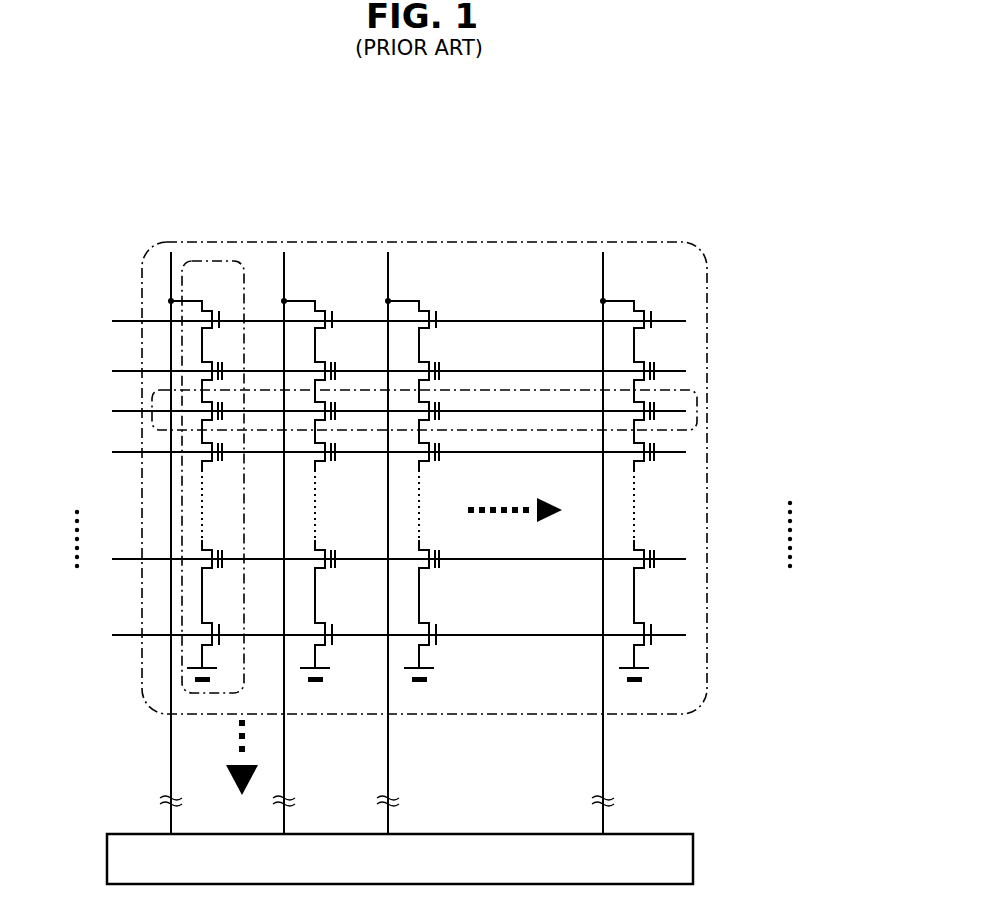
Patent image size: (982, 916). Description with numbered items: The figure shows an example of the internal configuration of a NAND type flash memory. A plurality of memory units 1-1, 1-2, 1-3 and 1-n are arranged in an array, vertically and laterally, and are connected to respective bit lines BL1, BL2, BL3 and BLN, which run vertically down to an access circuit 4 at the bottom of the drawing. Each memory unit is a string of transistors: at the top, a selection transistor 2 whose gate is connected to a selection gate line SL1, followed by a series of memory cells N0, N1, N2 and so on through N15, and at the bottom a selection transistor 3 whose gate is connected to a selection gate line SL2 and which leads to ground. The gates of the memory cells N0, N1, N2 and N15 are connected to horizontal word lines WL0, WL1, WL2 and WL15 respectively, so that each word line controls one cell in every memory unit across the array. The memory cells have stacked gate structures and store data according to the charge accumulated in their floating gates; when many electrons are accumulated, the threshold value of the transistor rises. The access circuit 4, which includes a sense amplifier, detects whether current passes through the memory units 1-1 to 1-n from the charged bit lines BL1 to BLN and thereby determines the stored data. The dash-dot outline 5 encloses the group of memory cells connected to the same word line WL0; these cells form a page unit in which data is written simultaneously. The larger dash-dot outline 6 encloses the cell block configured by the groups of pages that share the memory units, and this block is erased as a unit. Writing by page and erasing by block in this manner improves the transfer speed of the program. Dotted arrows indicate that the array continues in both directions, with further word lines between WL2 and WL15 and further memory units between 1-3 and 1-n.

The memory unit 1-1 is at (218, 250).
The memory unit 1-2 is at (322, 287).
The memory unit 1-3 is at (425, 287).
The memory unit 1-n is at (648, 289).
The selection transistor 2 is at (205, 303).
The selection transistor 3 is at (205, 648).
The access circuit 4 is at (693, 858).
The group of memory cells 5 is at (700, 402).
The cell block 6 is at (702, 250).
The selection gate line SL1 is at (121, 321).
The selection gate line SL2 is at (120, 636).
The word line WL0 is at (662, 373).
The word line WL1 is at (662, 413).
The word line WL2 is at (660, 454).
The word line WL15 is at (660, 561).
The memory cell N0 is at (203, 377).
The memory cell N1 is at (203, 416).
The memory cell N2 is at (203, 457).
The memory cell N15 is at (203, 562).
The bit line BL1 is at (168, 749).
The bit line BL2 is at (287, 748).
The bit line BL3 is at (391, 749).
The bit line BLN is at (606, 749).